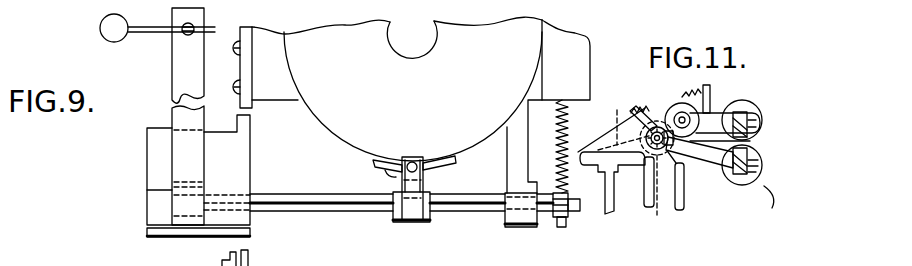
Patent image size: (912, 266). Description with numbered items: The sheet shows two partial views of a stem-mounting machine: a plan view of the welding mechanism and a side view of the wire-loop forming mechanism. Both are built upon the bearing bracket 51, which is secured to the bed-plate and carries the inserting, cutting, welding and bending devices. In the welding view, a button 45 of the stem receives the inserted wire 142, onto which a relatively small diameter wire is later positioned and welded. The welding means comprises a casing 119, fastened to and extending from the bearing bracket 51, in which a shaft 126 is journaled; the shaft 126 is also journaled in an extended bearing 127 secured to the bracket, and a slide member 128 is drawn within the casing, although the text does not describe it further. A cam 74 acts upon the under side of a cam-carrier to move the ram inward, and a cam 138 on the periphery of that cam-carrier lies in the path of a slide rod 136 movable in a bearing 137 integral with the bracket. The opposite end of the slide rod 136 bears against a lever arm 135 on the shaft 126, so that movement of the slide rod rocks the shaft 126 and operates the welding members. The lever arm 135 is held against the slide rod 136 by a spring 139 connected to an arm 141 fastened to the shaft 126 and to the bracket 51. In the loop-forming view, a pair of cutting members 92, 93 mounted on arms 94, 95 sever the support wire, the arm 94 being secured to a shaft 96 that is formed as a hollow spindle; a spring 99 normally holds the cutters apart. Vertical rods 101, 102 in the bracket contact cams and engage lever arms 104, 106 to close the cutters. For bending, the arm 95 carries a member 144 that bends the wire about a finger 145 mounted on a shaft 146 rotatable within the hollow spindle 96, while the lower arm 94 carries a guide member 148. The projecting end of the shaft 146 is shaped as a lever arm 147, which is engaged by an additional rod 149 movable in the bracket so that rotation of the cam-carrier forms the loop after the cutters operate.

In FIG. 9, the button 45 is at (114, 42).
In FIG. 9, the inserted wire 142 is at (156, 33).
In FIG. 9, the slide bar 128 is at (180, 142).
In FIG. 9, the casing 119 is at (147, 187).
In FIG. 9, the cam 74 is at (325, 127).
In FIG. 9, the bearing bracket 51 is at (590, 87).
In FIG. 9, the spring 139 is at (566, 136).
In FIG. 9, the arm 141 is at (569, 222).
In FIG. 9, the shaft 126 is at (458, 211).
In FIG. 9, the extended bearing 127 is at (527, 230).
In FIG. 9, the lever arm 135 is at (426, 186).
In FIG. 9, the slide rod 136 is at (426, 157).
In FIG. 9, the bearing 137 is at (390, 171).
In FIG. 9, the cam 138 is at (456, 165).
In FIG. 9, the cutting member 93 is at (251, 257).
In FIG. 11, the cutting member 93 is at (745, 100).
In FIG. 11, the rod 102 is at (609, 205).
In FIG. 11, the lever arm 104 is at (645, 108).
In FIG. 11, the lever arm 106 is at (631, 121).
In FIG. 11, the shaft 96 is at (657, 121).
In FIG. 11, the spring 99 is at (687, 104).
In FIG. 11, the arm 95 is at (722, 110).
In FIG. 11, the member 144 is at (760, 135).
In FIG. 11, the arm 94 is at (713, 183).
In FIG. 11, the finger 145 is at (756, 146).
In FIG. 11, the guide member 148 is at (758, 152).
In FIG. 11, the cutting member 92 is at (769, 207).
In FIG. 11, the lever arm 147 is at (672, 153).
In FIG. 11, the rod 149 is at (684, 212).
In FIG. 11, the shaft 146 is at (667, 194).
In FIG. 11, the rod 101 is at (647, 212).